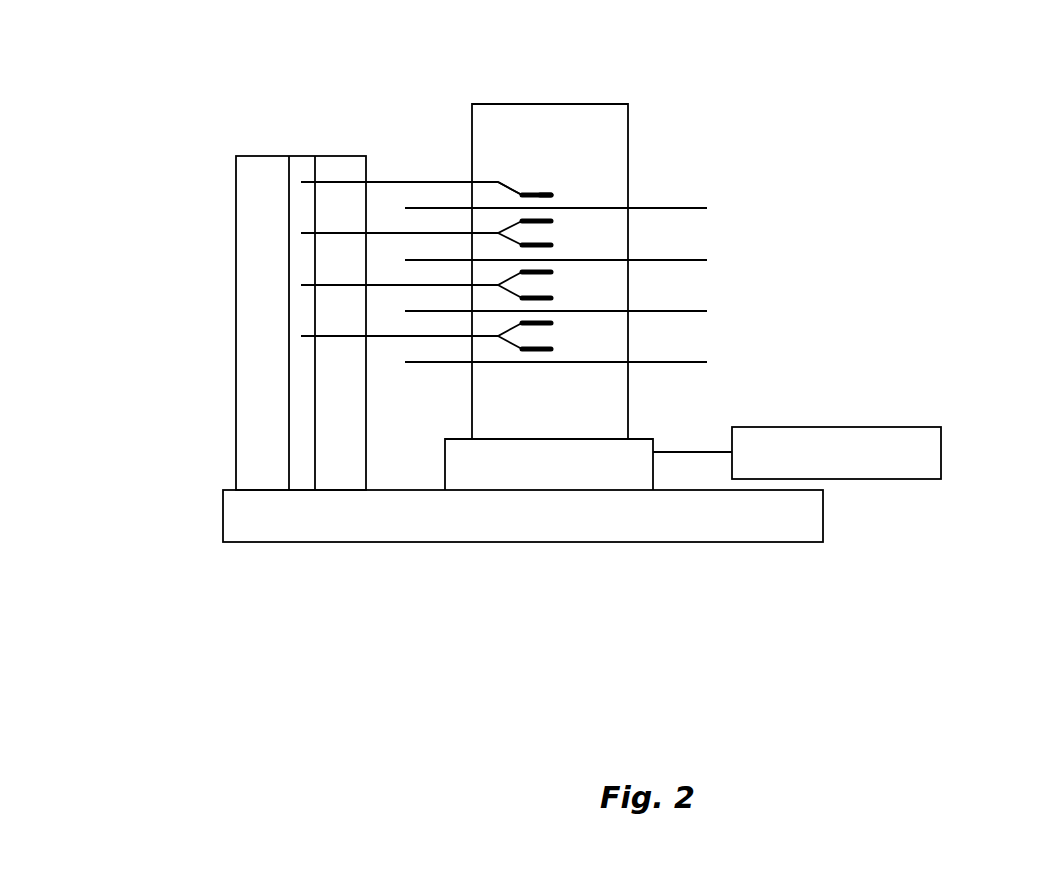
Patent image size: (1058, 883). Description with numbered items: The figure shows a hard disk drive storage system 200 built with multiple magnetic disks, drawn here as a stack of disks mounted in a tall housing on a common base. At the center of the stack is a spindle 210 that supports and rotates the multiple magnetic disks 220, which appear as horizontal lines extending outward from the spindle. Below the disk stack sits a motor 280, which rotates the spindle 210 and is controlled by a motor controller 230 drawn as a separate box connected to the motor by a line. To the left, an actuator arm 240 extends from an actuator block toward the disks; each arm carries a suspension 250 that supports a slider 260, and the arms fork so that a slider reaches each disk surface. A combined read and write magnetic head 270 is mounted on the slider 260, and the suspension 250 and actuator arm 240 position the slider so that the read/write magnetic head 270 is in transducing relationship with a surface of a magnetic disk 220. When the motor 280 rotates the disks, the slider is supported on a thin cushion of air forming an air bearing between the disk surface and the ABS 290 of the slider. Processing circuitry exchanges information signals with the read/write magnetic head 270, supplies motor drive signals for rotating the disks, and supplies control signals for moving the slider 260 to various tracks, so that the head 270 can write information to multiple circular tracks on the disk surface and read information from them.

The magnetic disk storage system 200 is at (102, 625).
The spindle 210 is at (617, 103).
The magnetic disk 220 is at (668, 207).
The motor controller 230 is at (862, 426).
The actuator arm 240 is at (420, 182).
The suspension 250 is at (510, 182).
The slider 260 is at (540, 192).
The read/write magnetic head 270 is at (548, 352).
The motor 280 is at (645, 437).
The ABS 290 is at (551, 196).